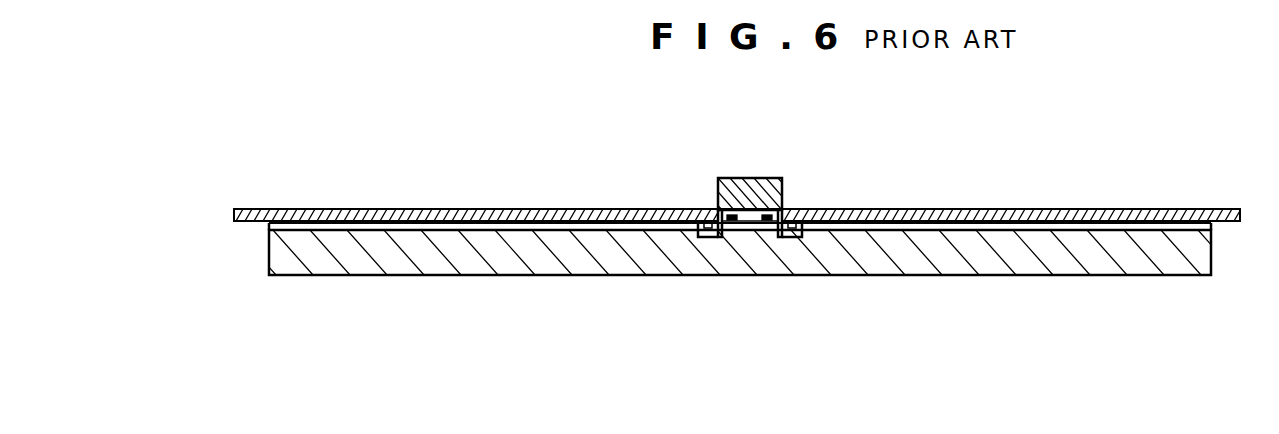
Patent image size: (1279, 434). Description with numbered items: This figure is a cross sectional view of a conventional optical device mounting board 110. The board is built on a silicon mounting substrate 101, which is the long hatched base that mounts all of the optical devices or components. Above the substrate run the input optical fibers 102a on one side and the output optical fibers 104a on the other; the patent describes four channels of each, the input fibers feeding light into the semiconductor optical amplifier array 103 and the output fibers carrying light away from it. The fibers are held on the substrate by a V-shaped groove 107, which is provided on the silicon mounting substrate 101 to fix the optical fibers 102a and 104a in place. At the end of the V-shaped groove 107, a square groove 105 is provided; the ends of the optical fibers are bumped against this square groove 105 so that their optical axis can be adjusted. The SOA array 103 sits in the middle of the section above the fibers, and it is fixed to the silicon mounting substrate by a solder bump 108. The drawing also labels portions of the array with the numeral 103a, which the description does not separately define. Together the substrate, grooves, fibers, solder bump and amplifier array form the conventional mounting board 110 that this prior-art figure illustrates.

The silicon mounting substrate 101 is at (1136, 258).
The input optical fibers 102a is at (262, 208).
The output optical fibers 104a is at (1195, 208).
The semiconductor optical amplifier array 103 is at (763, 170).
The chip terminal legs 103a is at (717, 188).
The square groove 105 is at (709, 238).
The V-shaped groove 107 is at (497, 226).
The solder bump 108 is at (717, 198).
The optical device mounting board 110 is at (1078, 170).